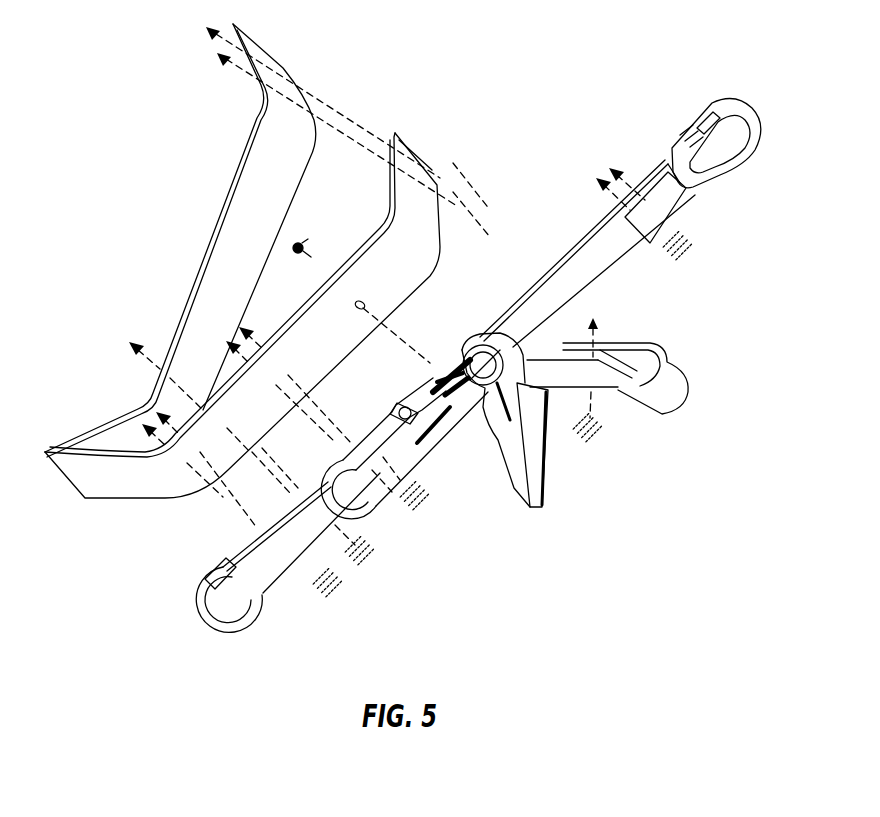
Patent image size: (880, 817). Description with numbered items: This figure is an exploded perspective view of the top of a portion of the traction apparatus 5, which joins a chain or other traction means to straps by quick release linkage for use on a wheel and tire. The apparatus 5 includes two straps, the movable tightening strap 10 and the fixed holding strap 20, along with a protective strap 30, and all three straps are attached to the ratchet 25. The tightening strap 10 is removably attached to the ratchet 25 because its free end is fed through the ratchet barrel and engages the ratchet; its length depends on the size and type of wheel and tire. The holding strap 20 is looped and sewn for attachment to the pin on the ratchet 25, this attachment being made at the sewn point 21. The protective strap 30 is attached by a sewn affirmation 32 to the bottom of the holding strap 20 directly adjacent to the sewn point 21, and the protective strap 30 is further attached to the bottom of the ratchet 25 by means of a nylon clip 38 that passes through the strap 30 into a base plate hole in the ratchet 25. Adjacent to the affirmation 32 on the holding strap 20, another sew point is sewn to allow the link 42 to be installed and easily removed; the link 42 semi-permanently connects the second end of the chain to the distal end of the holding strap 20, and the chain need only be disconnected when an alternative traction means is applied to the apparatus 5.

The apparatus 5 is at (668, 470).
The tightening strap 10 is at (570, 263).
The holding strap 20 is at (268, 568).
The sewn point 21 is at (423, 507).
The ratchet 25 is at (540, 507).
The protective strap 30 is at (212, 262).
The sewn affirmation 32 is at (372, 555).
The nylon clip 38 is at (300, 242).
The link 42 is at (202, 597).